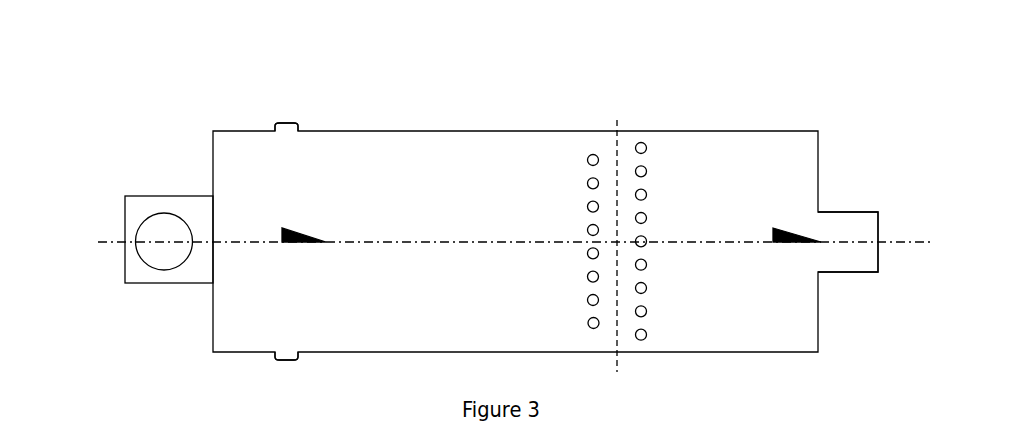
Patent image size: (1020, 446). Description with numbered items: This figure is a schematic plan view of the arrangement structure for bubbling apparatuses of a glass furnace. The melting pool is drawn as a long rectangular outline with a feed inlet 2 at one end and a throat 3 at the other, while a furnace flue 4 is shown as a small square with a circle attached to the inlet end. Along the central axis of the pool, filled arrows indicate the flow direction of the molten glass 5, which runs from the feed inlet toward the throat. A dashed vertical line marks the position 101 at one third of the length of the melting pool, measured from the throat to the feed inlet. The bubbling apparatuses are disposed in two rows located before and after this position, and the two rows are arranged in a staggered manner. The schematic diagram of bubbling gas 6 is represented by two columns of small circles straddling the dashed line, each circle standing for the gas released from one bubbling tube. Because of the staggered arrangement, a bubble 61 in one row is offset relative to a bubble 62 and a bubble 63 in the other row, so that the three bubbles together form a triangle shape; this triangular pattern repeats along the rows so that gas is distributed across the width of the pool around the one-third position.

The feed inlet 2 is at (275, 127).
The throat 3 is at (912, 196).
The furnace flue 4 is at (162, 240).
The flow direction of the molten glass 5 is at (345, 210).
The schematic diagram of bubbling gas 6 is at (646, 240).
The bubble 61 is at (590, 321).
The bubble 62 is at (645, 309).
The bubble 63 is at (645, 332).
The position at 1/3 length of the melting pool 101 is at (617, 131).